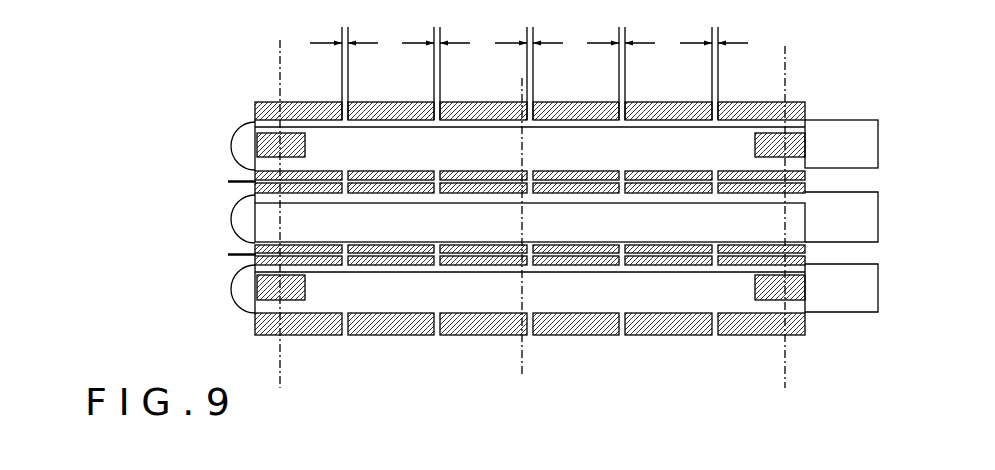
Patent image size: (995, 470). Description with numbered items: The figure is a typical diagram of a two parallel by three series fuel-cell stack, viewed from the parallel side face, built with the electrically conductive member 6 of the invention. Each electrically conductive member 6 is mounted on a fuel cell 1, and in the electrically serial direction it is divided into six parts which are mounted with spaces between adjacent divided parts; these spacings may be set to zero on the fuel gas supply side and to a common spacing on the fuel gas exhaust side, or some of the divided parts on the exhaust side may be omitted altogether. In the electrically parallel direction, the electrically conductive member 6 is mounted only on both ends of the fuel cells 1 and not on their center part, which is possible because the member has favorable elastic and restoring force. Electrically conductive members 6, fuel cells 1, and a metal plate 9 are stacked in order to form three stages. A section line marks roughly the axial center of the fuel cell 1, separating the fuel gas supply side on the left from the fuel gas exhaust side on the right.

The fuel cell 1 is at (855, 107).
The electrically conductive member 6 is at (263, 138).
The metal plate 9 is at (230, 181).